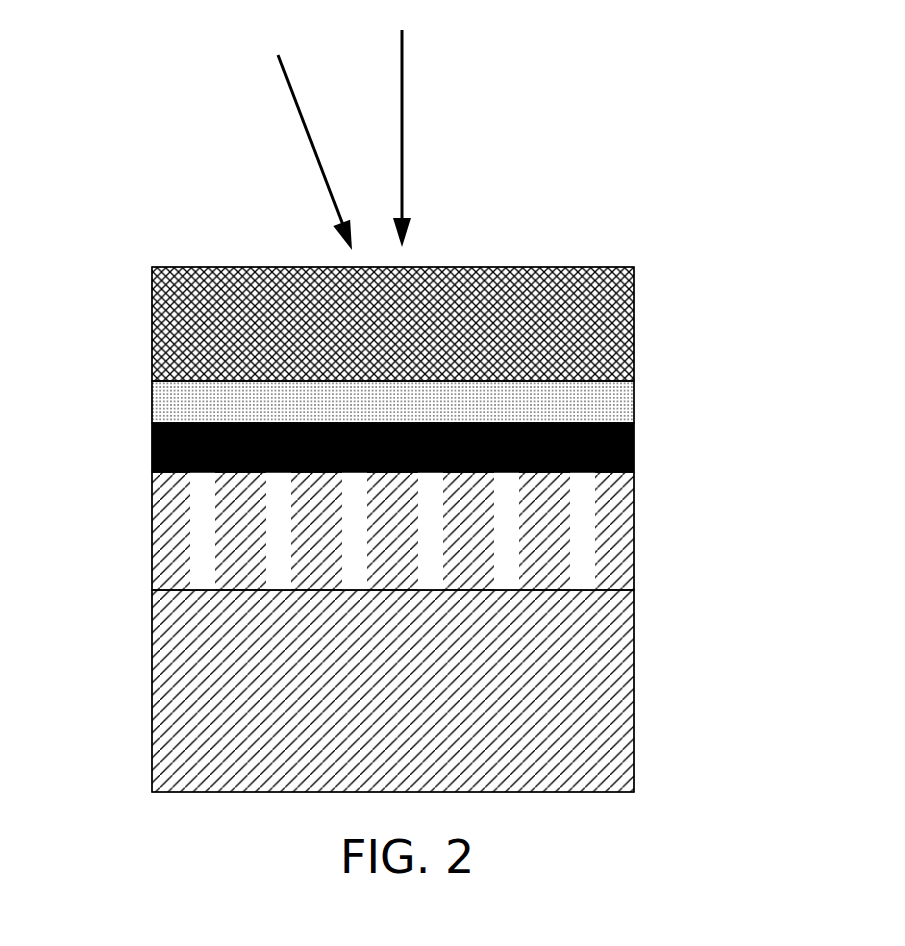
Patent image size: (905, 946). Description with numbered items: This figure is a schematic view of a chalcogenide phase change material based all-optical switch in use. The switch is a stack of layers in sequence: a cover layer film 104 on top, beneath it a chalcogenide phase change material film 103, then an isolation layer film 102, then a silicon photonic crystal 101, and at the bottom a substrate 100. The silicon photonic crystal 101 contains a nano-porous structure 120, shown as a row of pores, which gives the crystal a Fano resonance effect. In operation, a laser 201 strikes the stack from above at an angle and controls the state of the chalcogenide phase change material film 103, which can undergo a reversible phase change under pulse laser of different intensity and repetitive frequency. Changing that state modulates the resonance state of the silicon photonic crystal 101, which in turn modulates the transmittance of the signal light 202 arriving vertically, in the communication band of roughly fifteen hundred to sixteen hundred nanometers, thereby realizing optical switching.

The substrate 100 is at (634, 675).
The silicon photonic crystal 101 is at (634, 540).
The isolation layer film 102 is at (634, 438).
The chalcogenide phase change material film 103 is at (152, 401).
The cover layer film 104 is at (152, 337).
The nano-porous structure 120 is at (263, 590).
The laser 201 is at (293, 152).
The signal light 202 is at (429, 138).